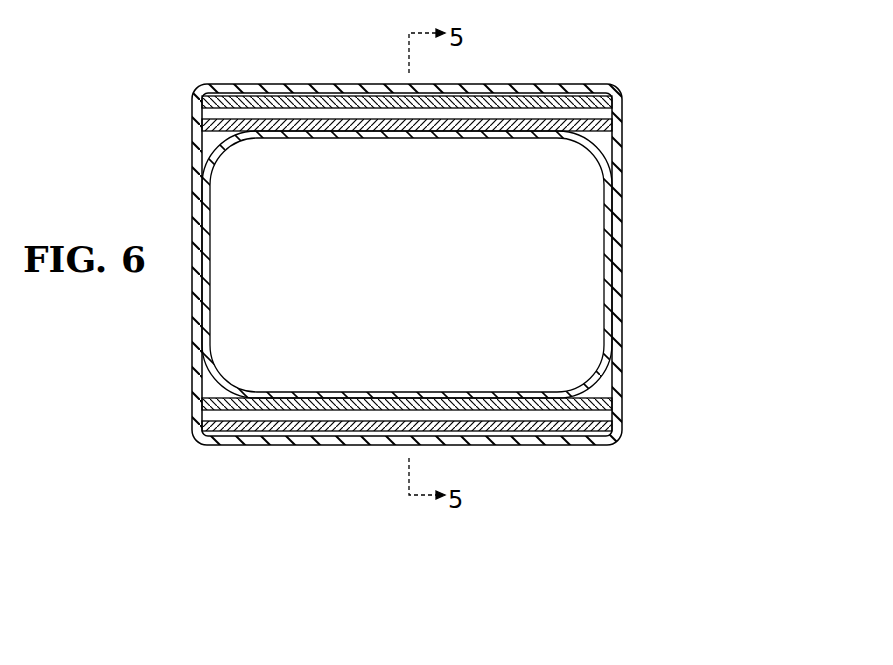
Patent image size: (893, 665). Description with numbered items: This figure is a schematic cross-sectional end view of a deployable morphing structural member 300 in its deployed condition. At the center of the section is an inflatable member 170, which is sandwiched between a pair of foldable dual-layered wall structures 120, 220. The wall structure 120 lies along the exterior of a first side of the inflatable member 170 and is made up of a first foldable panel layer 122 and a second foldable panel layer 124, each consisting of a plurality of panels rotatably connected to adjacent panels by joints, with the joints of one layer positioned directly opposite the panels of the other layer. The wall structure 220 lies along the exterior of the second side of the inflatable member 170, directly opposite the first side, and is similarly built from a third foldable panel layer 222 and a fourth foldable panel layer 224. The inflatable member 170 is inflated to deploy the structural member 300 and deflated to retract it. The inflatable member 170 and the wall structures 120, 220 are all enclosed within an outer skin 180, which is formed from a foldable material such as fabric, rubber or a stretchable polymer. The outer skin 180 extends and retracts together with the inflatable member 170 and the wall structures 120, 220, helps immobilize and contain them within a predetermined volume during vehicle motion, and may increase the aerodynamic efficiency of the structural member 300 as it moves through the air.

The deployable morphing structural member 300 is at (430, 268).
The outer skin 180 is at (623, 178).
The foldable dual-layered wall structure 120 is at (407, 75).
The first foldable panel layer 122 is at (346, 125).
The second foldable panel layer 124 is at (502, 97).
The inflatable member 170 is at (213, 150).
The foldable dual-layered wall structure 220 is at (407, 457).
The third foldable panel layer 222 is at (352, 408).
The fourth foldable panel layer 224 is at (532, 431).